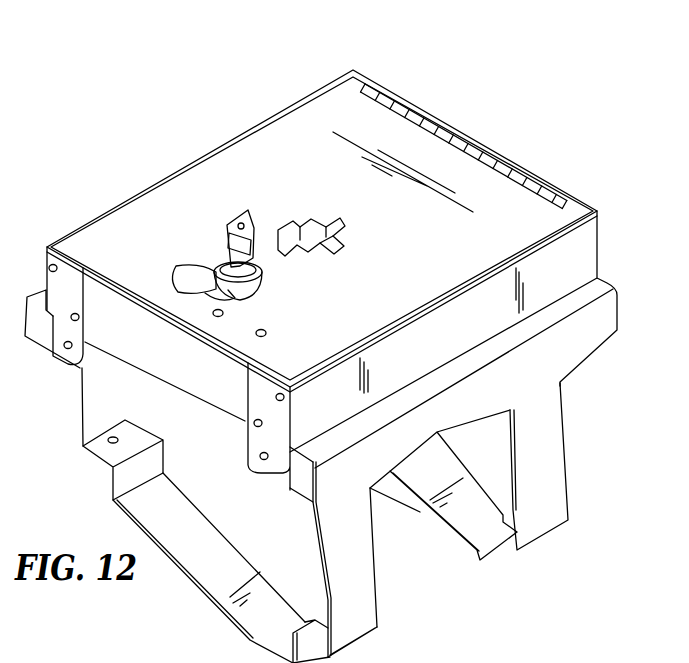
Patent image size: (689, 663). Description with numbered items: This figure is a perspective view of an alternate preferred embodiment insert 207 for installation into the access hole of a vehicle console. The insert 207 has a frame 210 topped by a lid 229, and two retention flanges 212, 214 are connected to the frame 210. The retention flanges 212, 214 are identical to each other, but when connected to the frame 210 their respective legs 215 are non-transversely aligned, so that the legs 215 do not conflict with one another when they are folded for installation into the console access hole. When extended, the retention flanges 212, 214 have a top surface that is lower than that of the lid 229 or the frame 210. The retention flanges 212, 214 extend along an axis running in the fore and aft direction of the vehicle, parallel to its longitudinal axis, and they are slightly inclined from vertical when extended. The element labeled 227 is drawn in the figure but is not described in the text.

The insert 207 is at (180, 127).
The lid 229 is at (453, 163).
The mounting bracket 227 is at (608, 283).
The retention flange 214 is at (78, 397).
The frame 210 is at (208, 387).
The retention flange 212 is at (376, 572).
The leg 215 is at (376, 612).